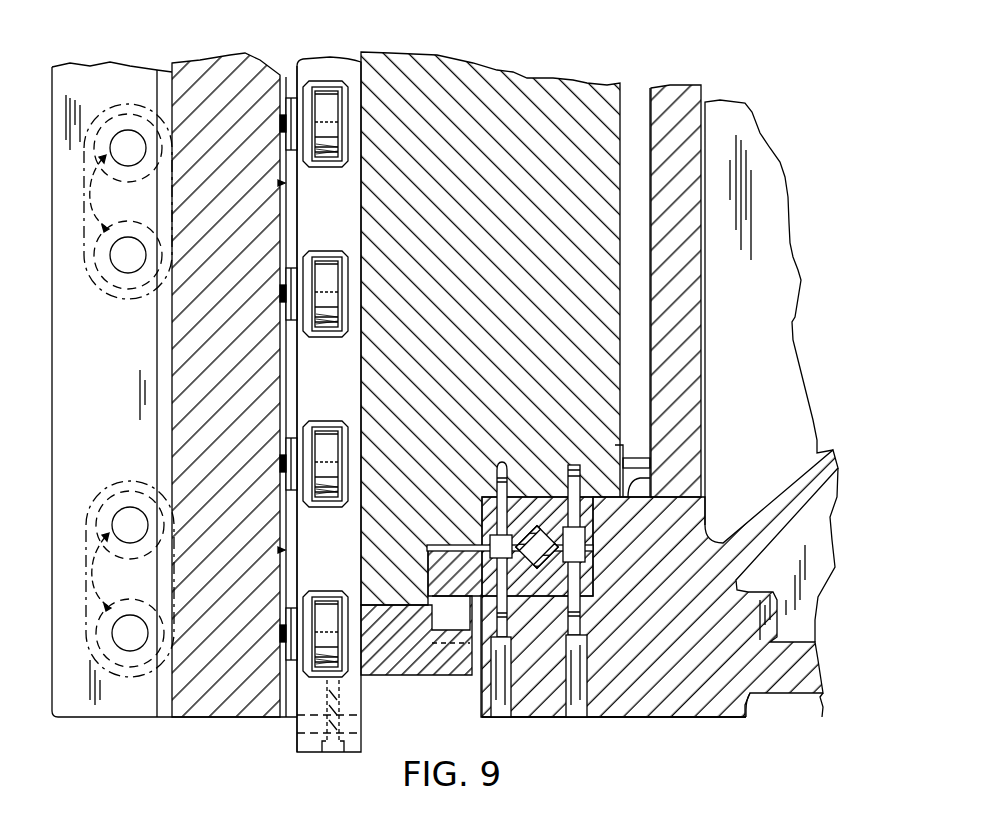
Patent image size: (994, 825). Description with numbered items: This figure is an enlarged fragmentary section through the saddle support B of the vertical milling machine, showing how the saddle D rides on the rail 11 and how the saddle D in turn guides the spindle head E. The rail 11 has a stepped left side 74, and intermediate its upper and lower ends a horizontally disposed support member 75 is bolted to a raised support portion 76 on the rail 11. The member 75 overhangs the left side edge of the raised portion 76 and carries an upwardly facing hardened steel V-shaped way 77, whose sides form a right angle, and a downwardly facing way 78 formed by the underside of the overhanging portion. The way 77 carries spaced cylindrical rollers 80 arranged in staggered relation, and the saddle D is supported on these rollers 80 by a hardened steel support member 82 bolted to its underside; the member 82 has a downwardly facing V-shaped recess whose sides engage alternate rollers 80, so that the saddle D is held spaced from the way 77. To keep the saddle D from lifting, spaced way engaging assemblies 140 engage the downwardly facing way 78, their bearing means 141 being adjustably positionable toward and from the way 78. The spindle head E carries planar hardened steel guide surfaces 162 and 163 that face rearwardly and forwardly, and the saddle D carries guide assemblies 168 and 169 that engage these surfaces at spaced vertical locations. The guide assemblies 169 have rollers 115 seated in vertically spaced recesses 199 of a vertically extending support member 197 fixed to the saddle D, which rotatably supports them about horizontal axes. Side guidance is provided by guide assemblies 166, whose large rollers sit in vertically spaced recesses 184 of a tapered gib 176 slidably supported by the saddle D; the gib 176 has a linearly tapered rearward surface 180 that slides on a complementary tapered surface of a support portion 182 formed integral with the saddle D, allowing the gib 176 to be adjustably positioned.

The rail 11 is at (787, 270).
The left side 74 is at (646, 238).
The horizontally disposed member 75 is at (590, 568).
The raised support portion 76 is at (678, 715).
The upwardly facing way 77 is at (546, 560).
The downwardly facing way 78 is at (443, 601).
The cylindrical rollers 80 is at (540, 527).
The support member 82 is at (483, 508).
The rollers 115 is at (157, 145).
The way engaging assemblies 140 is at (472, 650).
The bearing means 141 is at (462, 625).
The guide surface 162 is at (300, 45).
The guide surface 163 is at (162, 72).
The guide assemblies 166 is at (284, 301).
The guide assemblies 168 is at (279, 183).
The guide assemblies 169 is at (93, 165).
The gib 176 is at (350, 43).
The rearward surface 180 is at (355, 702).
The support portion 182 is at (340, 398).
The recesses 184 is at (338, 122).
The support member 197 is at (108, 42).
The recesses 199 is at (100, 299).
The spindle head E is at (233, 72).
The saddle D is at (513, 90).
The saddle support B is at (687, 89).